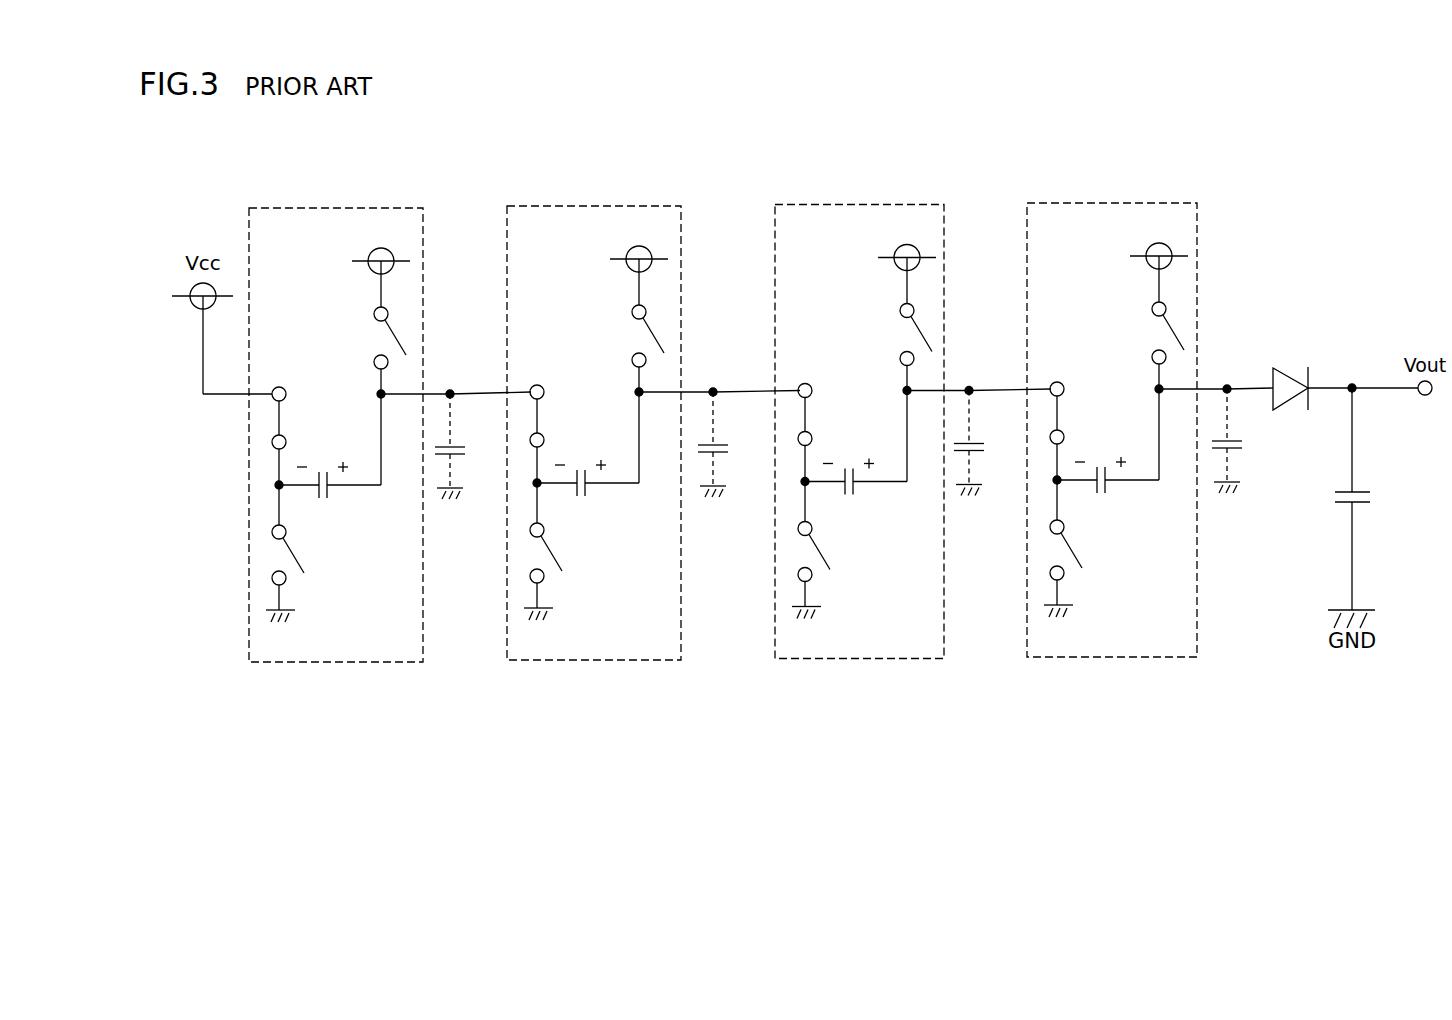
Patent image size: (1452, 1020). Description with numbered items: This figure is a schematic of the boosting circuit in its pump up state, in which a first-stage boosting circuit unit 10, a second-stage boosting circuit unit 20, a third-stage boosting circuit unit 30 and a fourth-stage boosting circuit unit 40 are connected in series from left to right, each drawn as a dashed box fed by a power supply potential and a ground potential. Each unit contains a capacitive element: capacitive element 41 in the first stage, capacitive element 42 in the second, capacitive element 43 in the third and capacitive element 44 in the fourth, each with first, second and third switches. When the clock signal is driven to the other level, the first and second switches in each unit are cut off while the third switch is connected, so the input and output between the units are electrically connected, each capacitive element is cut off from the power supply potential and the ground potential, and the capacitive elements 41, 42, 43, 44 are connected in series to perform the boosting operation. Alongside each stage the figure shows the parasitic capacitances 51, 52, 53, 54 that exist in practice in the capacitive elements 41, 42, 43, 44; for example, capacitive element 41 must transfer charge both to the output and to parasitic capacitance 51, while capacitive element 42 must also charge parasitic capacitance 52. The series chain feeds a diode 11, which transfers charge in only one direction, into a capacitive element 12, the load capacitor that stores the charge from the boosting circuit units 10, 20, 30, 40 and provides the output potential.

The first-stage boosting circuit unit 10 is at (347, 206).
The second-stage boosting circuit unit 20 is at (612, 417).
The third-stage boosting circuit unit 30 is at (874, 416).
The fourth-stage boosting circuit unit 40 is at (1129, 414).
The capacitive element 41 is at (323, 460).
The capacitive element 42 is at (588, 457).
The capacitive element 43 is at (856, 456).
The capacitive element 44 is at (1108, 454).
The parasitic capacitance 51 is at (460, 465).
The parasitic capacitance 52 is at (727, 469).
The parasitic capacitance 53 is at (983, 468).
The parasitic capacitance 54 is at (1241, 465).
The diode 11 is at (1295, 365).
The capacitive element 12 is at (1363, 482).